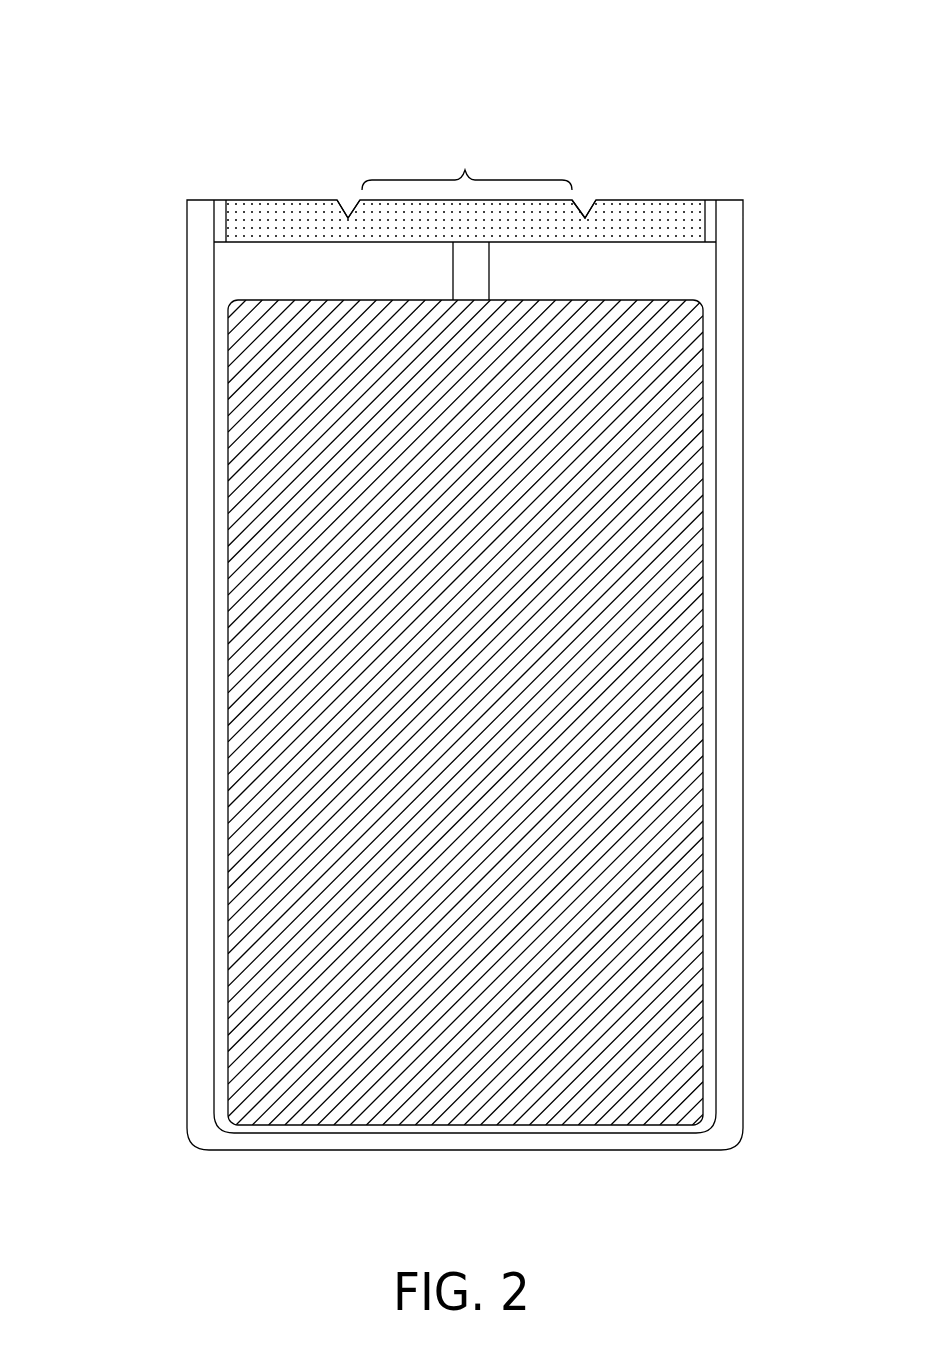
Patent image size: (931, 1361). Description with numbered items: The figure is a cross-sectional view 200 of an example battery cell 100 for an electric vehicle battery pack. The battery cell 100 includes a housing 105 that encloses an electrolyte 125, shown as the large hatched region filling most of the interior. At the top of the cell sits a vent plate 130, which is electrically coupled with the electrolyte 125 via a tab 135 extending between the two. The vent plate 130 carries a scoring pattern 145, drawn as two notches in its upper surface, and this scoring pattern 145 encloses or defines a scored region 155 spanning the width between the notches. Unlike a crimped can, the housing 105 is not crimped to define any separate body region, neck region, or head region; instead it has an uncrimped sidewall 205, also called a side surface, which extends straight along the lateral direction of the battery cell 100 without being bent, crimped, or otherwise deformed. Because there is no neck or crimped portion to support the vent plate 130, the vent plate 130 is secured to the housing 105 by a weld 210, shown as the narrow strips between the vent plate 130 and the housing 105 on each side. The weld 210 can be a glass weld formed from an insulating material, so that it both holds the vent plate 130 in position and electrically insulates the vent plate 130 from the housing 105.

The cross-sectional view 200 is at (478, 28).
The battery cell 100 is at (110, 165).
The housing 105 is at (197, 577).
The uncrimped sidewall 205 is at (758, 196).
The weld 210 is at (220, 212).
The vent plate 130 is at (543, 215).
The scoring pattern 145 is at (347, 188).
The scored region 155 is at (467, 167).
The tab 135 is at (470, 287).
The electrolyte 125 is at (257, 742).